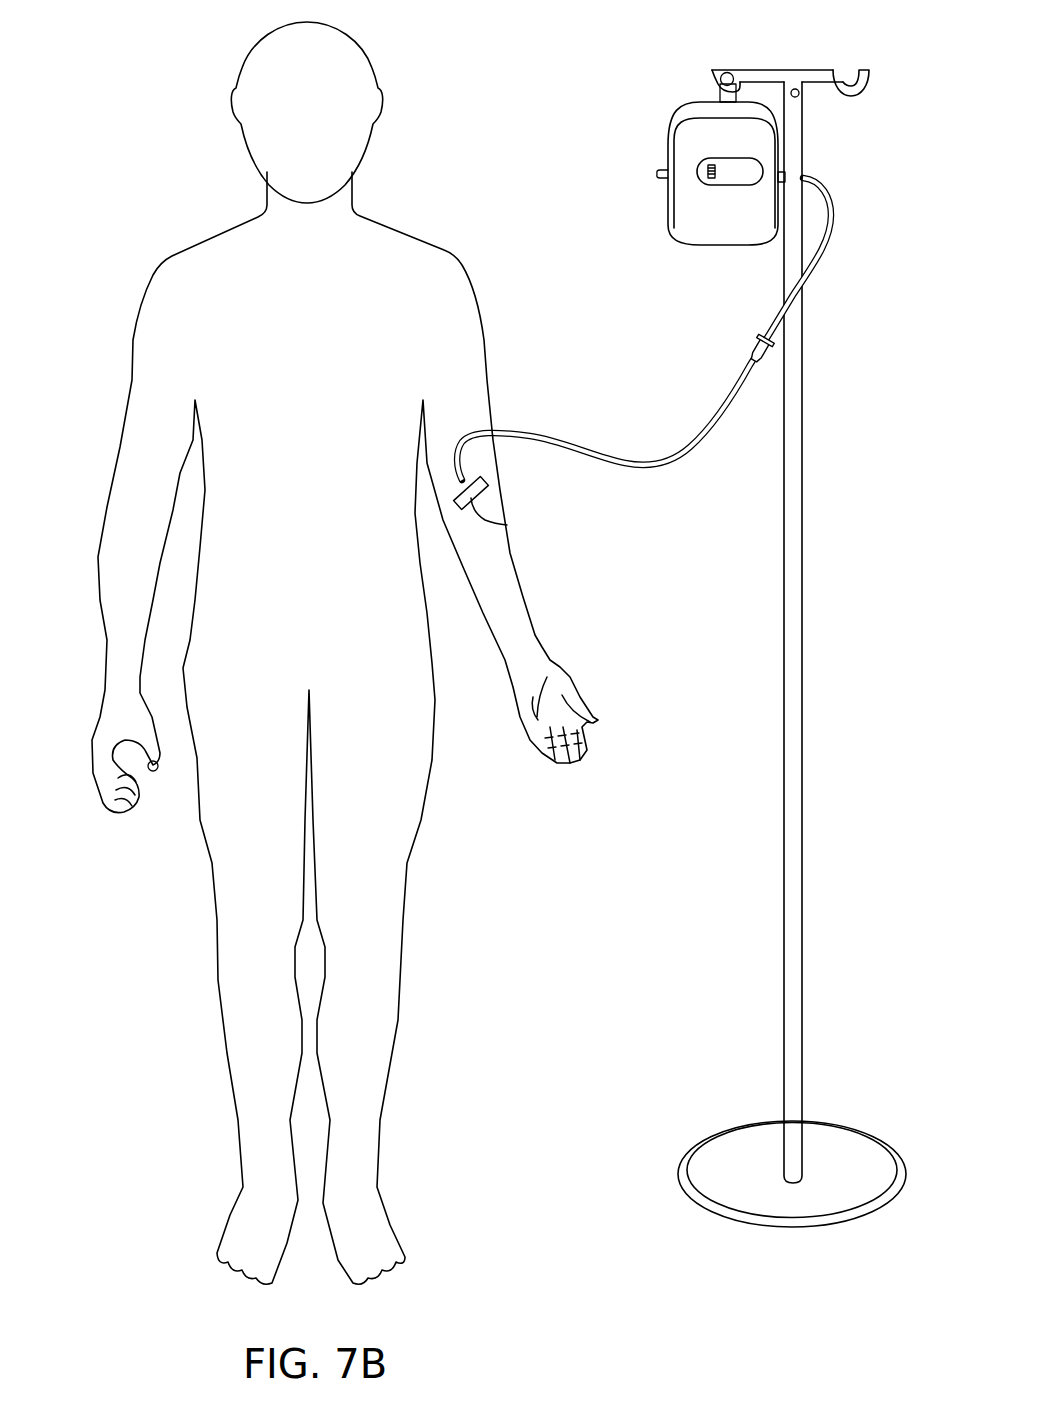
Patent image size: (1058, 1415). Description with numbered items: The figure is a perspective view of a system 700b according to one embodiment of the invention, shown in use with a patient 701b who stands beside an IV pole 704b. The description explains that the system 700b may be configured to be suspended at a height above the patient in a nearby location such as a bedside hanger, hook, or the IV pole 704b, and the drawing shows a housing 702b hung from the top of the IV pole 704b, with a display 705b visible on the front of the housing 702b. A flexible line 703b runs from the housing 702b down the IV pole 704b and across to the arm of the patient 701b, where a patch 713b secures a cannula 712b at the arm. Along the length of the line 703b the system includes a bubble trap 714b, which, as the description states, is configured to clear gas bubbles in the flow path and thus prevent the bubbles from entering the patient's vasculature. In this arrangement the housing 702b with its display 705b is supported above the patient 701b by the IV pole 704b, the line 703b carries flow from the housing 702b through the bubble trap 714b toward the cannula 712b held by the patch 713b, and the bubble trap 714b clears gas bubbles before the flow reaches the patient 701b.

The system 700b is at (130, 52).
The patient 701b is at (458, 318).
The infusion pump 702b is at (708, 138).
The tubing 703b is at (830, 222).
The IV pole 704b is at (803, 500).
The display 705b is at (735, 177).
The catheter 712b is at (507, 525).
The securement patch 713b is at (480, 490).
The bubble trap 714b is at (750, 360).